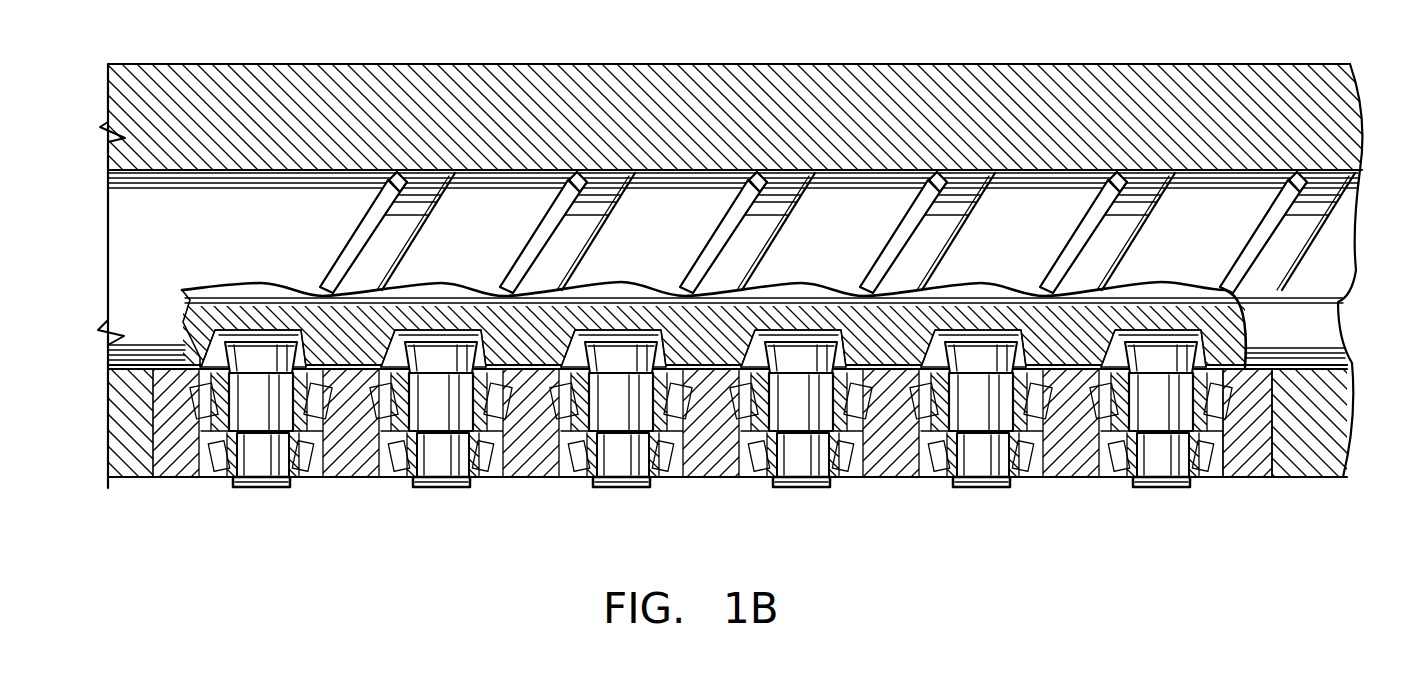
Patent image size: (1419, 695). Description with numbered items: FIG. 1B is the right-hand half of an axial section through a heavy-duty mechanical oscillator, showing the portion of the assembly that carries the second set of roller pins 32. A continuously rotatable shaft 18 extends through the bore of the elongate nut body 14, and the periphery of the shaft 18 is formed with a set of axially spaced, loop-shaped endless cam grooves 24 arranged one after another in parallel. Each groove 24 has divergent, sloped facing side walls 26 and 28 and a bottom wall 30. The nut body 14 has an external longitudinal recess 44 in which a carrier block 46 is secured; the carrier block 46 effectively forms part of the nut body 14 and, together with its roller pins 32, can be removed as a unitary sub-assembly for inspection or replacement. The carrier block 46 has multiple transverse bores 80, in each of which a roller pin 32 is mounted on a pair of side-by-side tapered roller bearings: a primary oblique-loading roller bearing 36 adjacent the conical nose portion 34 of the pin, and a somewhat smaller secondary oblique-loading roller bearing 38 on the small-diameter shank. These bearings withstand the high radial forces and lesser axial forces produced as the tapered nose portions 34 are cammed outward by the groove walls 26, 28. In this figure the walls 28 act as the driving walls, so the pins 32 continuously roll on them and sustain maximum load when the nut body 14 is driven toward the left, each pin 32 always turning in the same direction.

The nut body 14 is at (208, 82).
The shaft 18 is at (108, 243).
The endless cam grooves 24 is at (1327, 182).
The groove side wall 26 is at (367, 217).
The groove side wall 28 is at (403, 267).
The bottom wall 30 is at (905, 245).
The roller pins 32 is at (270, 455).
The conical nose portions 34 is at (242, 340).
The primary oblique-loading roller bearings 36 is at (528, 457).
The secondary oblique-loading roller bearings 38 is at (490, 455).
The longitudinal recess 44 is at (187, 470).
The carrier block 46 is at (1252, 465).
The transverse bores 80 is at (750, 477).